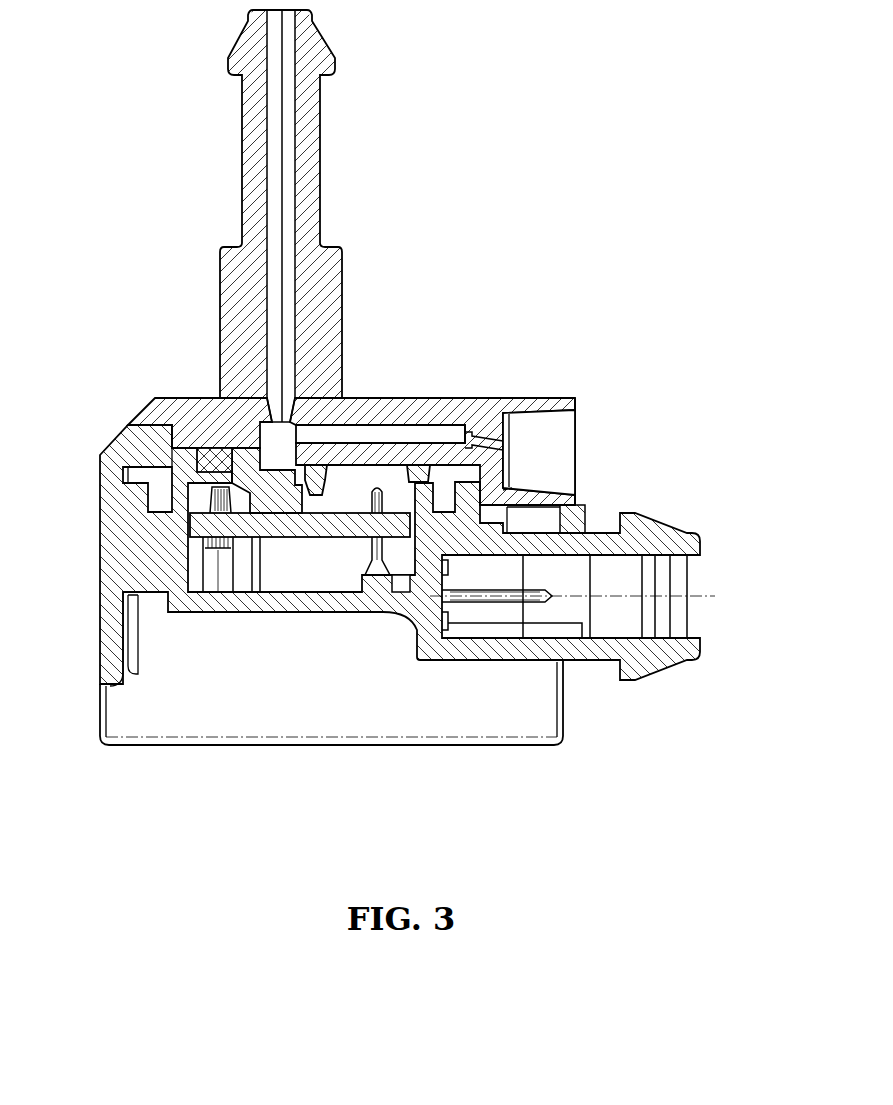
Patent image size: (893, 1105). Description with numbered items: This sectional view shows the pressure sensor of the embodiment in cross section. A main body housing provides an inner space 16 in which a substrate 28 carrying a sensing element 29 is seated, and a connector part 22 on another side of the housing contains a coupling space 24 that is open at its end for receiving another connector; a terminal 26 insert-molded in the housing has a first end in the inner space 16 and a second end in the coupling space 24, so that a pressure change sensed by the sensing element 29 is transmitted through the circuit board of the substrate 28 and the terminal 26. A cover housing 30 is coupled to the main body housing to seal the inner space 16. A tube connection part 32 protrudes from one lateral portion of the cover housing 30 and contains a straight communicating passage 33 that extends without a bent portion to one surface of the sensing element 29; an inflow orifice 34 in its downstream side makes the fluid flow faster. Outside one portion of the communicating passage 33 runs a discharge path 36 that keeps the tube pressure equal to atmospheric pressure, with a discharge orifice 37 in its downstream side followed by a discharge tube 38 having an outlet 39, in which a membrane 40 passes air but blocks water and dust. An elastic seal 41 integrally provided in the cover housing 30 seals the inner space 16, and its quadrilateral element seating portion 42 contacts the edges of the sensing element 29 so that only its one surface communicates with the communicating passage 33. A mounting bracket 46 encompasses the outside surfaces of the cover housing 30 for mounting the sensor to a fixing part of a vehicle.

The inner space 16 is at (307, 570).
The connector part 22 is at (593, 645).
The coupling space 24 is at (613, 578).
The terminal 26 is at (433, 575).
The substrate 28 is at (192, 518).
The sensing element 29 is at (285, 498).
The cover housing 30 is at (147, 403).
The tube connection part 32 is at (248, 137).
The communicating passage 33 is at (287, 160).
The inflow orifice 34 is at (262, 445).
The discharge path 36 is at (400, 435).
The discharge orifice 37 is at (496, 430).
The discharge tube 38 is at (540, 400).
The outlet 39 is at (542, 458).
The membrane 40 is at (537, 428).
The seal 41 is at (135, 432).
The element seating portion 42 is at (187, 477).
The mounting bracket 46 is at (170, 745).